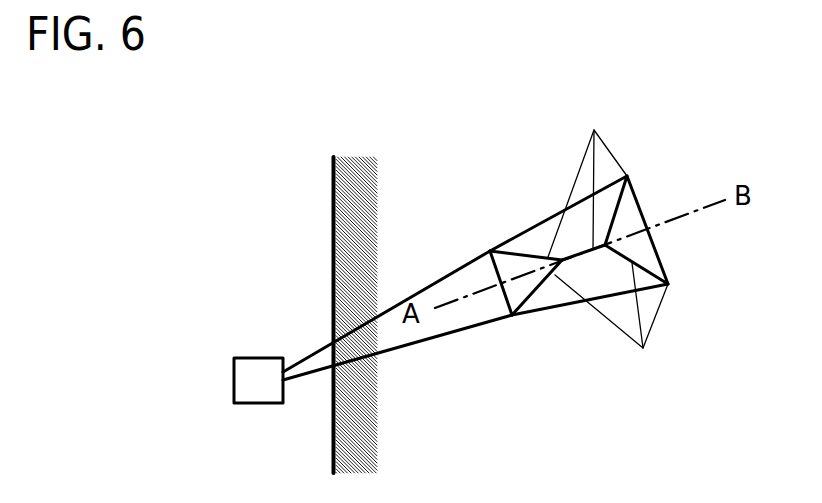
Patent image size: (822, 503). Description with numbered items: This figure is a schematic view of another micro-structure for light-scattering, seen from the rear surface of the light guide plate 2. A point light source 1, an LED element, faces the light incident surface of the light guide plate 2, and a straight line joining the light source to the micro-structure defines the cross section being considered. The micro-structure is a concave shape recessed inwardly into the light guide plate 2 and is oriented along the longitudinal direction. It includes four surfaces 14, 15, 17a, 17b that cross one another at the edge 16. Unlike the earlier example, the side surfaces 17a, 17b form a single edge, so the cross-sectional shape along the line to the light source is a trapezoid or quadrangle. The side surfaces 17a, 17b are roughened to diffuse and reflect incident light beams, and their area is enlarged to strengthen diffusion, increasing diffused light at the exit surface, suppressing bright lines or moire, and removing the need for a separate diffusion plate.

The point light source 1 is at (233, 373).
The light guide plate 2 is at (397, 218).
The surface 14 is at (513, 315).
The surface 15 is at (650, 262).
The edge 16 is at (612, 244).
The side surface 17a is at (542, 235).
The side surface 17b is at (557, 293).